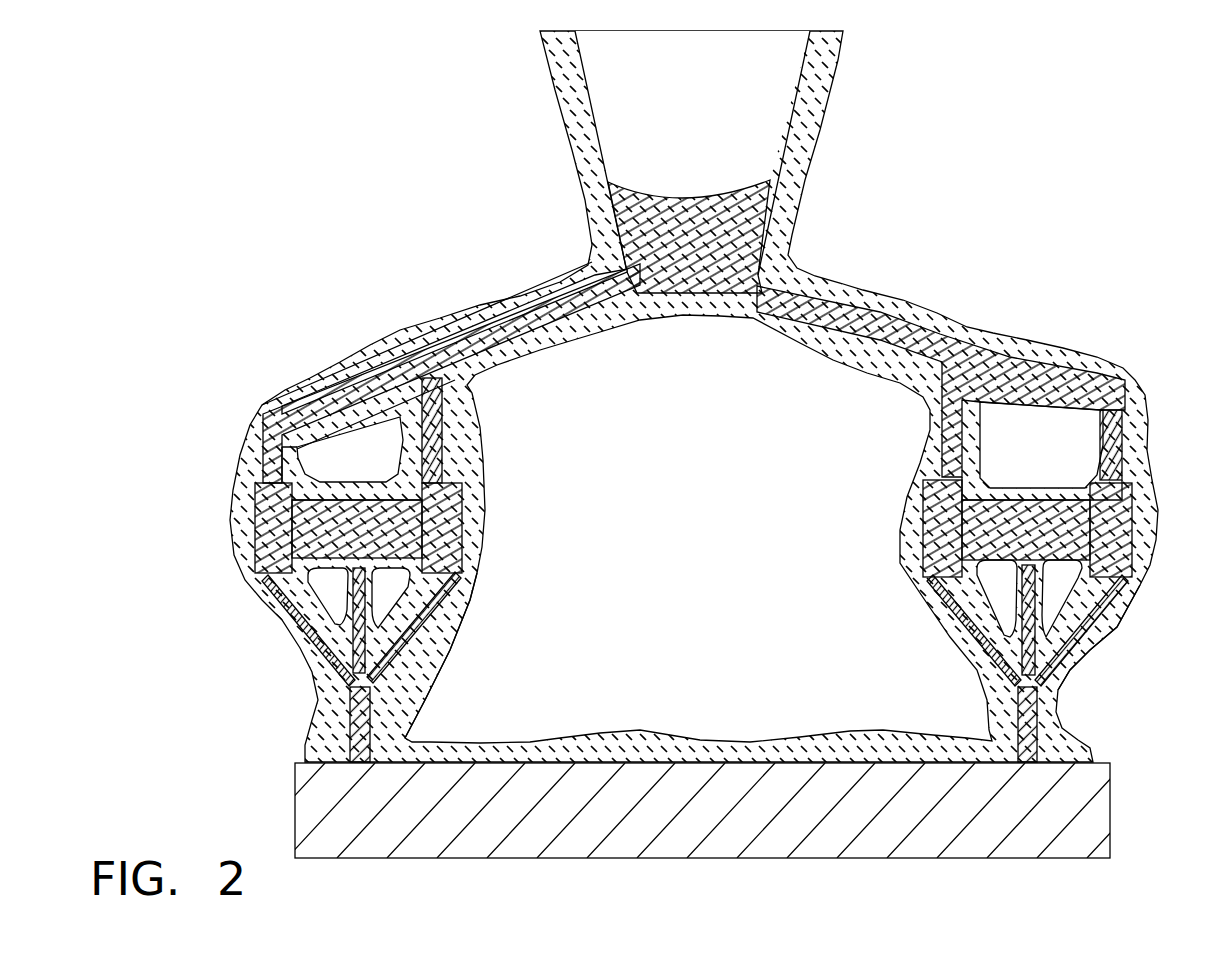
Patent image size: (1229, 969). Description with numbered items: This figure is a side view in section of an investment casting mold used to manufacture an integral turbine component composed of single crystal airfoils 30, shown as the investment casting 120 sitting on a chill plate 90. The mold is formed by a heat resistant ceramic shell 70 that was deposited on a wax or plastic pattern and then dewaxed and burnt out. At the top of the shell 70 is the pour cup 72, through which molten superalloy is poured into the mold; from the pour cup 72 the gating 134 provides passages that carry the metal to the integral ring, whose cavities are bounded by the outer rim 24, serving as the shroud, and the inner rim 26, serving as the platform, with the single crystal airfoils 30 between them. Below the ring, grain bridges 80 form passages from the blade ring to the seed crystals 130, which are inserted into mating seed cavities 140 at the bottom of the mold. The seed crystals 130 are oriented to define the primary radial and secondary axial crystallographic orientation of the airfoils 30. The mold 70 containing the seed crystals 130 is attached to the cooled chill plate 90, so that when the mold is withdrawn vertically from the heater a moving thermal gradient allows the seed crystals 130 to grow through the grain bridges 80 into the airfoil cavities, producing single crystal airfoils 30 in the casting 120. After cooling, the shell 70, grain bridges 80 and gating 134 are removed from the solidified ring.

The outer rim 24 is at (1130, 573).
The inner rim 26 is at (447, 517).
The single crystal airfoil 30 is at (397, 513).
The ceramic shell 70 is at (1130, 372).
The pour cup 72 is at (827, 110).
The grain bridge 80 is at (310, 633).
The chill plate 90 is at (1095, 805).
The investment casting 120 is at (353, 268).
The seed crystal 130 is at (347, 727).
The gating 134 is at (482, 345).
The seed cavity 140 is at (402, 715).